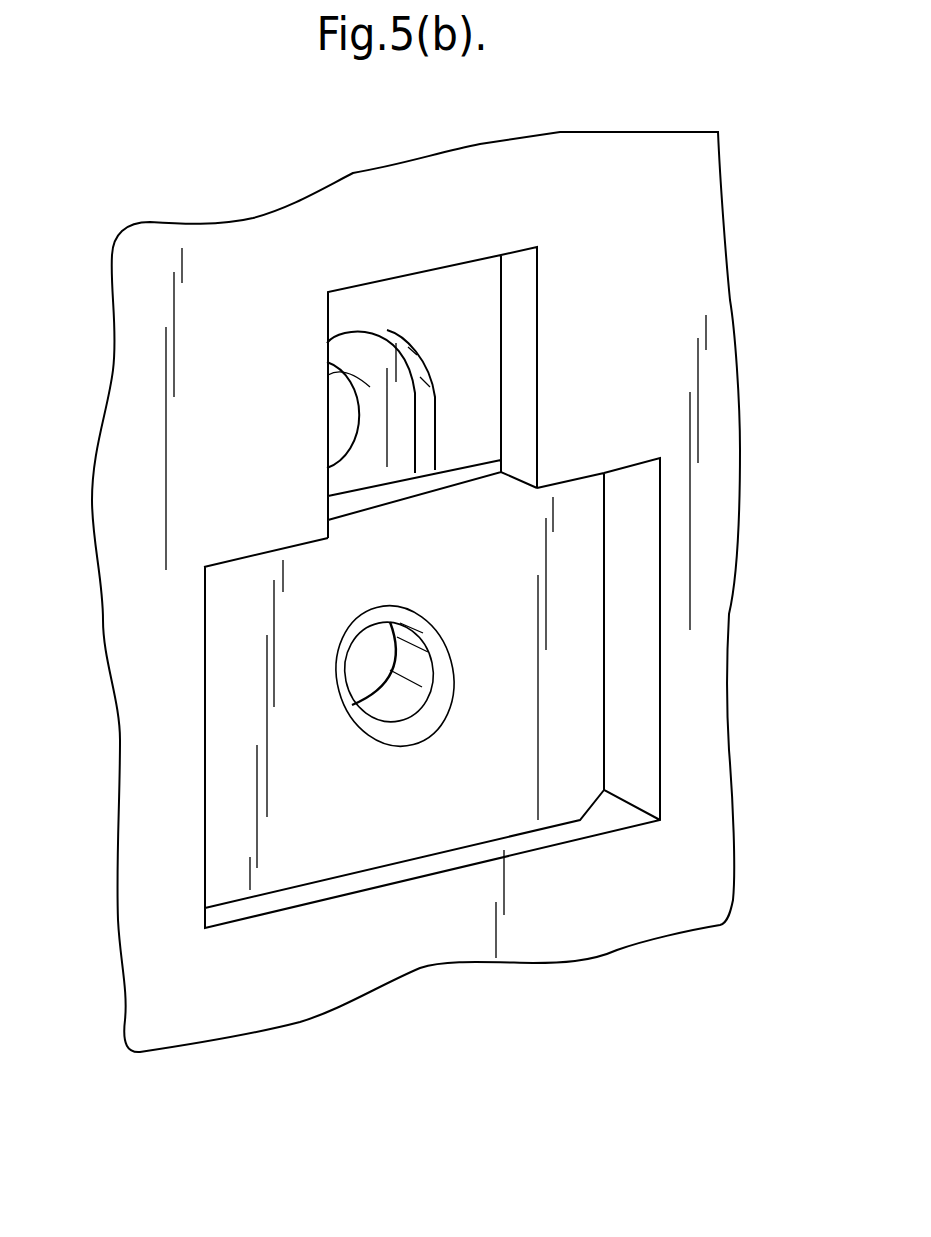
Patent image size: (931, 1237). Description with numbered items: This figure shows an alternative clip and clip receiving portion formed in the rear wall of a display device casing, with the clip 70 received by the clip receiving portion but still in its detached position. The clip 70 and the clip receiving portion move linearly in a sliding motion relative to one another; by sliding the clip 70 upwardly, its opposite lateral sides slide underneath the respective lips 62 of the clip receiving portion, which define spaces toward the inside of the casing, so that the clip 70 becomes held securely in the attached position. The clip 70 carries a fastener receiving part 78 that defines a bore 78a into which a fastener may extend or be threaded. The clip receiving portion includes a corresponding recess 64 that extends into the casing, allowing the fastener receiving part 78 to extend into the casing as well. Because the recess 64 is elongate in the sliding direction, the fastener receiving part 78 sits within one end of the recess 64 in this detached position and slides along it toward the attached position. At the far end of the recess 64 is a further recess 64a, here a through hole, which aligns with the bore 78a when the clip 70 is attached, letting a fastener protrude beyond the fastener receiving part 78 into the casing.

The lip 62 is at (292, 487).
The recess 64 is at (373, 342).
The further recess 64a is at (348, 407).
The clip 70 is at (292, 750).
The fastener receiving part 78 is at (380, 738).
The bore 78a is at (372, 648).